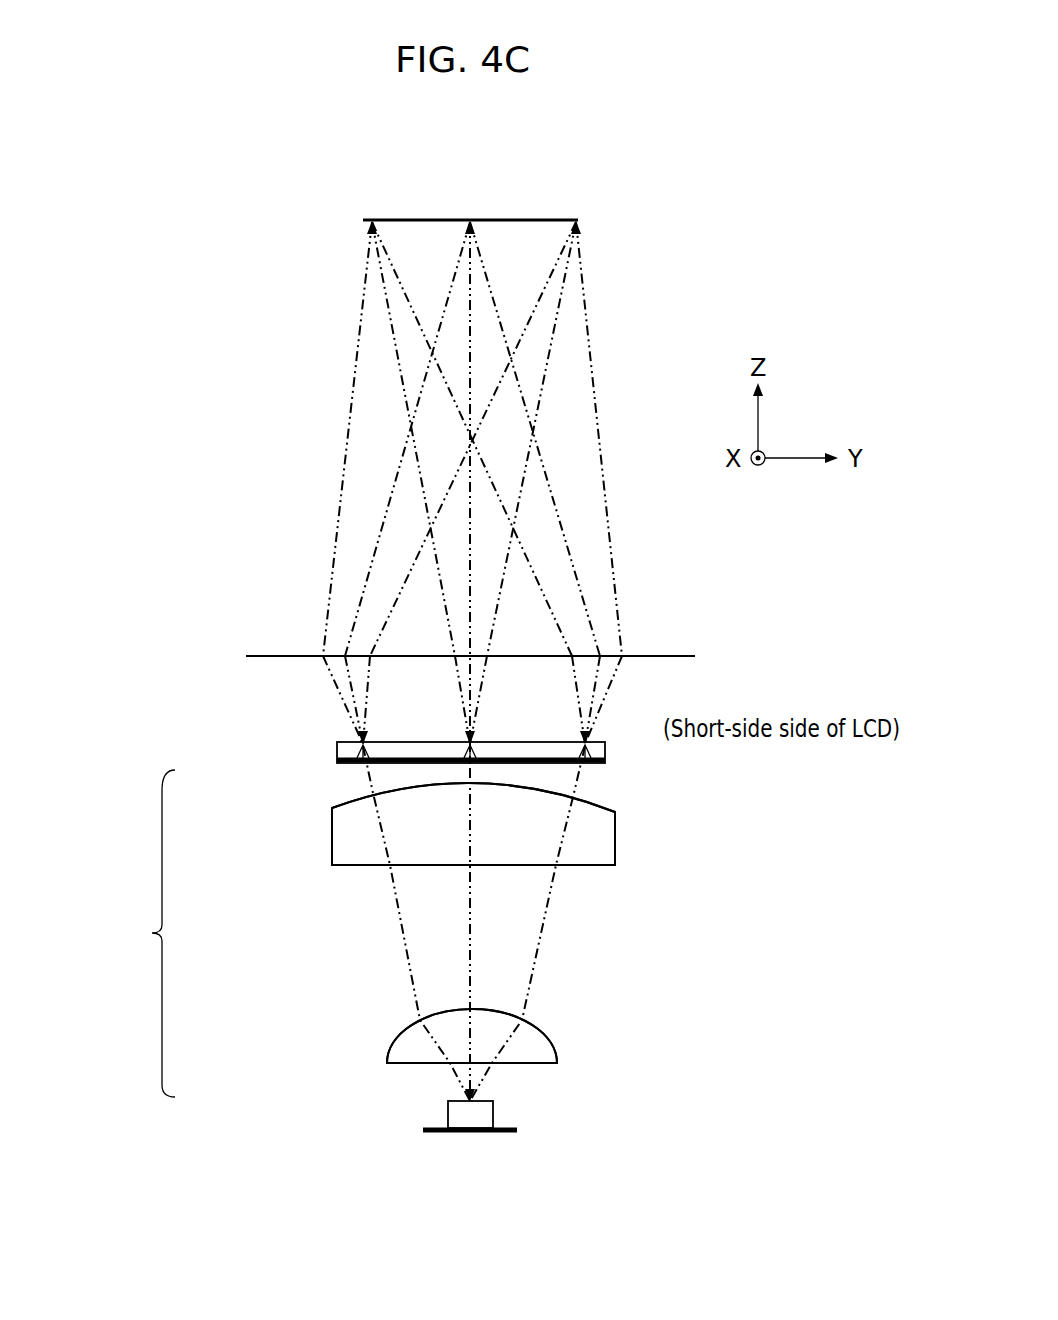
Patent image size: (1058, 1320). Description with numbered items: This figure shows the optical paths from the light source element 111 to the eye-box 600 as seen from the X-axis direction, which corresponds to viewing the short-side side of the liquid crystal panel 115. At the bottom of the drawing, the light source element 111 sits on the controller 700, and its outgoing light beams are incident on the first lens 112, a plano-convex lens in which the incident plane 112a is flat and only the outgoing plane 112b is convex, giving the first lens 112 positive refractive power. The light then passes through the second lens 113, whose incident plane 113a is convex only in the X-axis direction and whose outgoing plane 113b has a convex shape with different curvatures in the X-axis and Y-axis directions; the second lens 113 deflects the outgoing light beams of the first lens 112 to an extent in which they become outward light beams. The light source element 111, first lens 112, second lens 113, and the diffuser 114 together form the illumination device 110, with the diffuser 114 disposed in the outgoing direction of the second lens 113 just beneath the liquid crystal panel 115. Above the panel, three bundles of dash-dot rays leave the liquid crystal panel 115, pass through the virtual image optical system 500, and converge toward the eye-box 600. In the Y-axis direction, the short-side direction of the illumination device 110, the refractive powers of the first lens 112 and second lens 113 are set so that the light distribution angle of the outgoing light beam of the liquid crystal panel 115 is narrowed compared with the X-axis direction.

The illumination device 110 is at (139, 933).
The light source element 111 is at (448, 1118).
The first lens 112 is at (387, 1048).
The incident plane 112a is at (535, 1065).
The outgoing plane 112b is at (545, 1043).
The second lens 113 is at (332, 834).
The incident plane 113a is at (597, 866).
The outgoing plane 113b is at (593, 800).
The diffuser 114 is at (337, 762).
The liquid crystal panel 115 is at (337, 748).
The virtual image optical system 500 is at (685, 656).
The eye-box 600 is at (500, 220).
The controller 700 is at (512, 1134).